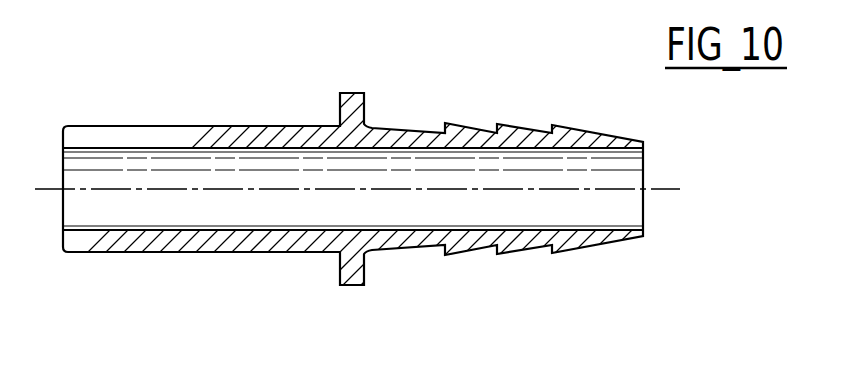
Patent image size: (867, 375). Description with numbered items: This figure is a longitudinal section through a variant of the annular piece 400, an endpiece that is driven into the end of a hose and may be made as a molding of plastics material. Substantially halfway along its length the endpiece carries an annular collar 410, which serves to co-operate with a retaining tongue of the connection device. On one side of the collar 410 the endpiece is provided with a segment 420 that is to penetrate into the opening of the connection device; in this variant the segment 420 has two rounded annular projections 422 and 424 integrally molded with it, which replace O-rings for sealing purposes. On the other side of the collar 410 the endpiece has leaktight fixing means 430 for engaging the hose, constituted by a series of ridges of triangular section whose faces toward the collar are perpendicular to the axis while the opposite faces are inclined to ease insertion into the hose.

The annular piece 400 is at (166, 114).
The annular collar 410 is at (358, 97).
The segment 420 is at (136, 262).
The rounded annular projection 422 is at (248, 253).
The rounded annular projection 424 is at (288, 253).
The leaktight fixing means 430 is at (502, 120).